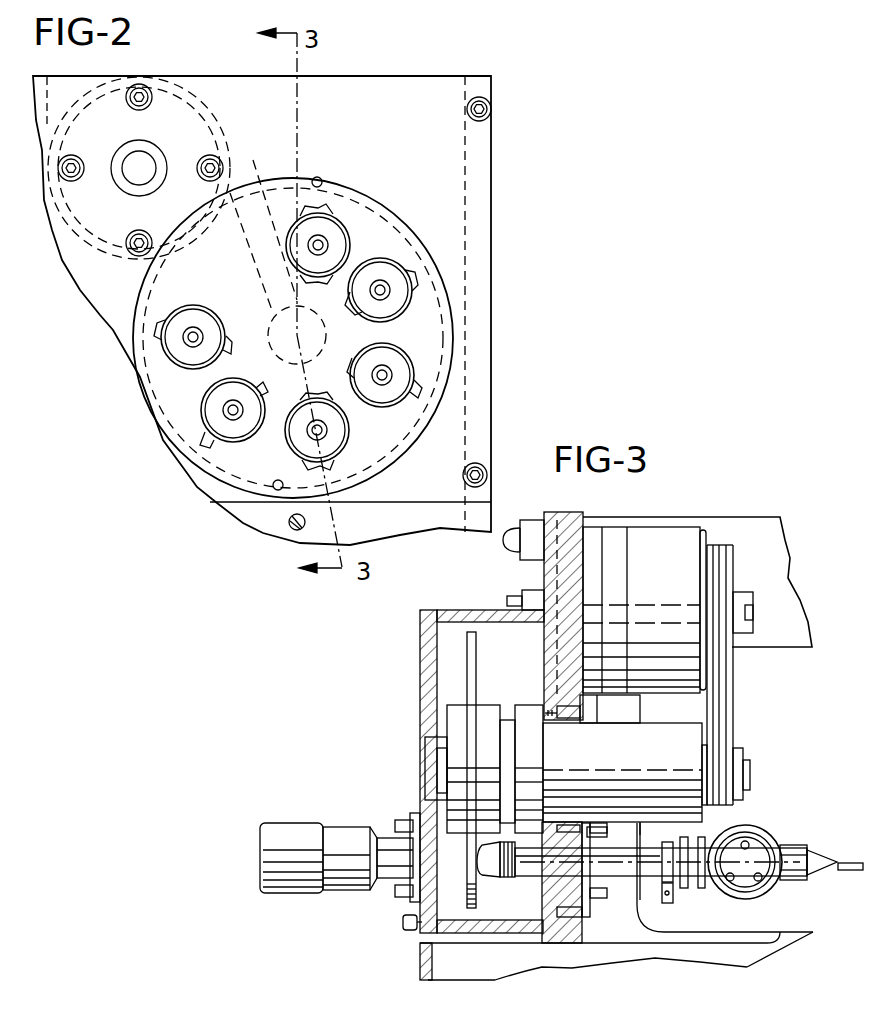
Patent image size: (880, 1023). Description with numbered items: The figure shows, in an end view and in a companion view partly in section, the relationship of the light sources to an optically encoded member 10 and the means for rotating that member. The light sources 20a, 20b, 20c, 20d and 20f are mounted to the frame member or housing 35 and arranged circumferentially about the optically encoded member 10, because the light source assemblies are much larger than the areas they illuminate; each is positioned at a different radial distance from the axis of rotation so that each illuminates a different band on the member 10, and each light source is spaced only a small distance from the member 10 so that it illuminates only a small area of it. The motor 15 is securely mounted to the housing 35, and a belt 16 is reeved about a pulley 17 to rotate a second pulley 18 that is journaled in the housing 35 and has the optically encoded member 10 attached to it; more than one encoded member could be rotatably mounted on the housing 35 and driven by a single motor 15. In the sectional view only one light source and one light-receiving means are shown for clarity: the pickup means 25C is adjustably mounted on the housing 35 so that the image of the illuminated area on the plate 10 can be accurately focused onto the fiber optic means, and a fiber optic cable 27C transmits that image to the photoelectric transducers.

In FIG. 2, the optically encoded member 10 is at (468, 320).
In FIG. 3, the optically encoded member 10 is at (470, 660).
In FIG. 2, the motor 15 is at (176, 96).
In FIG. 3, the motor 15 is at (668, 545).
In FIG. 2, the belt 16 is at (252, 212).
In FIG. 3, the belt 16 is at (728, 700).
In FIG. 2, the pulley 17 is at (60, 218).
In FIG. 3, the pulley 17 is at (735, 553).
In FIG. 2, the pulley 18 is at (276, 313).
In FIG. 3, the pulley 18 is at (738, 795).
In FIG. 2, the light source 20a is at (404, 297).
In FIG. 2, the light source 20b is at (212, 405).
In FIG. 2, the light source 20c is at (296, 438).
In FIG. 2, the light source 20d is at (412, 372).
In FIG. 2, the light source 20f is at (336, 236).
In FIG. 3, the light-receiving or pickup means 25C is at (625, 885).
In FIG. 3, the fiber optic cable 27C is at (848, 860).
In FIG. 2, the housing 35 is at (478, 158).
In FIG. 3, the housing 35 is at (545, 573).